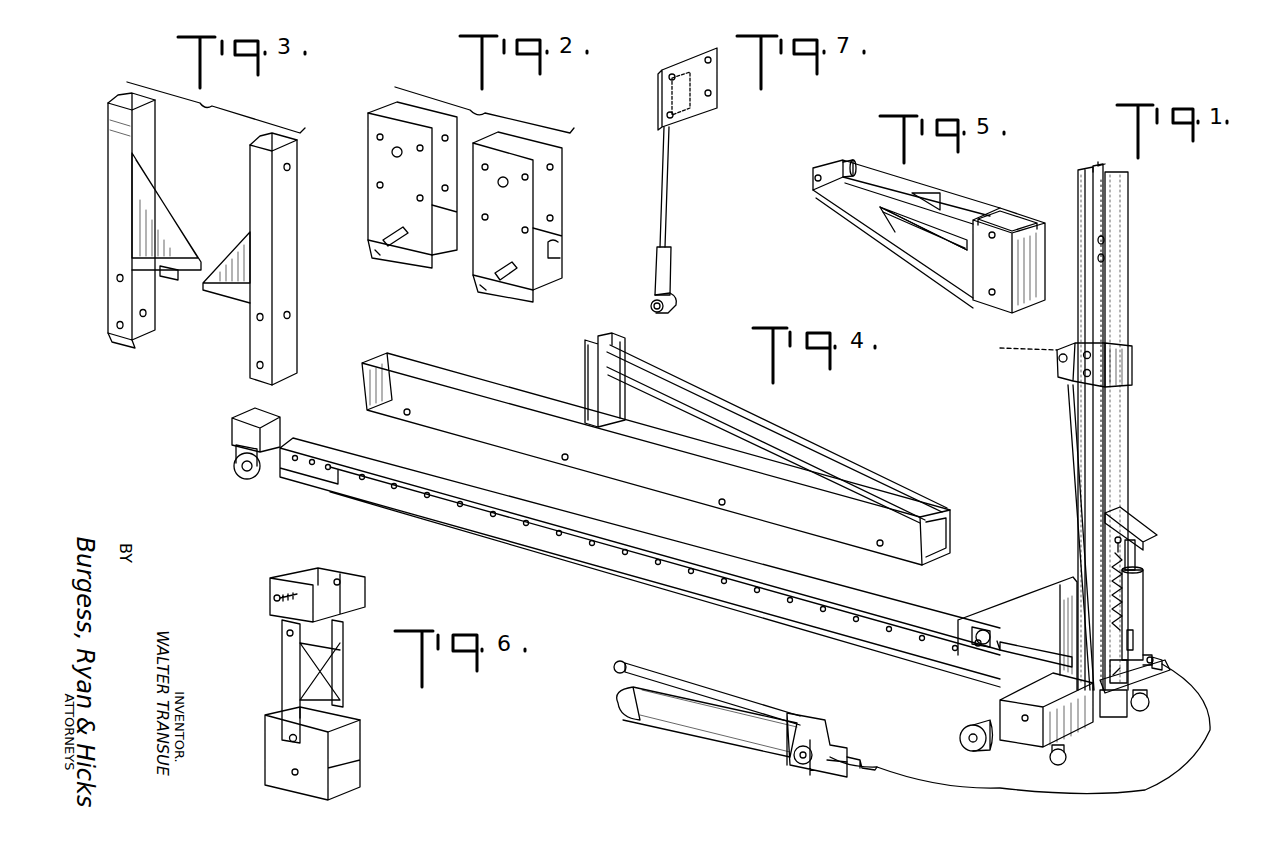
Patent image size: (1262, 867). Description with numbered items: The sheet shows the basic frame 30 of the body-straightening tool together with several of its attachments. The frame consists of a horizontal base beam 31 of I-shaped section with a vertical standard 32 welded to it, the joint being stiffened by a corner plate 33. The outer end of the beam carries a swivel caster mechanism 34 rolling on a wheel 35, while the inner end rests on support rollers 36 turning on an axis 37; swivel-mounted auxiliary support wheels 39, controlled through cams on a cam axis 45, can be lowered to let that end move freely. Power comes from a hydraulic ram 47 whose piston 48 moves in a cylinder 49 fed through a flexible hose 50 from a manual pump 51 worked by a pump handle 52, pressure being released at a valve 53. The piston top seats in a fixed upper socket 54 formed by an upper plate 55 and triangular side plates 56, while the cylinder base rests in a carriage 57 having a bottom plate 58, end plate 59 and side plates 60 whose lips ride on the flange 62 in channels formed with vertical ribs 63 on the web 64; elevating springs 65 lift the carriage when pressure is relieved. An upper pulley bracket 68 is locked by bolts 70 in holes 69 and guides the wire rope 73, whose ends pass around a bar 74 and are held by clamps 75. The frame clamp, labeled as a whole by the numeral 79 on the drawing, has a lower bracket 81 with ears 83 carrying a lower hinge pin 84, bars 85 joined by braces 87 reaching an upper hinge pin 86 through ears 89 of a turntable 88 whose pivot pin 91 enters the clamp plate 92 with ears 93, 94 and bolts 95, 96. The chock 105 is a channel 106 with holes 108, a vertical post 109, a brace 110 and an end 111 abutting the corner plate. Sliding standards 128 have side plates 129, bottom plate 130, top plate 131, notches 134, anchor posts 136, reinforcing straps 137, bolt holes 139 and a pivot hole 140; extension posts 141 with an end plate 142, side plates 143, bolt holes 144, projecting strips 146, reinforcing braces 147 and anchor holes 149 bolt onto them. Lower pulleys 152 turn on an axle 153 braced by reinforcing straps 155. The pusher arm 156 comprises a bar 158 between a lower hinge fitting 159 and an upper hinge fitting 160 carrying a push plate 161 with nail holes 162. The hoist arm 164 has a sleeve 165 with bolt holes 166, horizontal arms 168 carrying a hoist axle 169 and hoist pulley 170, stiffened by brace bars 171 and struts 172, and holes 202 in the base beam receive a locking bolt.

In FIG. 1, the basic frame 30 is at (645, 594).
In FIG. 1, the base beam 31 is at (560, 563).
In FIG. 1, the standard 32 is at (1130, 204).
In FIG. 1, the corner plate 33 is at (1010, 600).
In FIG. 1, the swivel caster mechanism 34 is at (232, 428).
In FIG. 1, the wheel 35 is at (235, 476).
In FIG. 1, the support roller 36 is at (1025, 722).
In FIG. 1, the axis 37 is at (960, 738).
In FIG. 1, the auxiliary support wheels 39 is at (1066, 752).
In FIG. 1, the cam axis 45 is at (1040, 750).
In FIG. 1, the hydraulic ram 47 is at (1147, 580).
In FIG. 1, the piston 48 is at (1138, 560).
In FIG. 1, the cylinder 49 is at (1136, 635).
In FIG. 1, the flexible hose 50 is at (1140, 789).
In FIG. 1, the manual pump 51 is at (692, 737).
In FIG. 1, the pump handle 52 is at (707, 688).
In FIG. 1, the valve 53 is at (803, 765).
In FIG. 1, the upper socket 54 is at (1153, 514).
In FIG. 1, the upper plate 55 is at (1130, 510).
In FIG. 1, the side plates 56 is at (1160, 532).
In FIG. 1, the carriage 57 is at (1165, 652).
In FIG. 1, the bottom plate 58 is at (1168, 665).
In FIG. 1, the end plate 59 is at (1168, 665).
In FIG. 1, the side plates 60 is at (1125, 660).
In FIG. 1, the flange 62 is at (1115, 458).
In FIG. 1, the vertical ribs 63 is at (1080, 607).
In FIG. 1, the web 64 is at (1110, 433).
In FIG. 1, the elevating springs 65 is at (1128, 600).
In FIG. 1, the upper pulley bracket 68 is at (1141, 351).
In FIG. 1, the holes 69 is at (1104, 258).
In FIG. 1, the bolts 70 is at (1083, 374).
In FIG. 1, the wire rope 73 is at (1072, 412).
In FIG. 1, the bar 74 is at (1112, 718).
In FIG. 1, the clamps 75 is at (1160, 680).
In FIG. 6, the slide post 79 is at (277, 676).
In FIG. 6, the lower bracket 81 is at (361, 765).
In FIG. 6, the ears 83 is at (361, 728).
In FIG. 6, the lower hinge pin 84 is at (289, 739).
In FIG. 6, the bars 85 is at (282, 695).
In FIG. 6, the upper hinge pin 86 is at (286, 633).
In FIG. 6, the braces 87 is at (335, 668).
In FIG. 6, the turntable 88 is at (370, 615).
In FIG. 6, the ears 89 is at (283, 650).
In FIG. 6, the pivot pin 91 is at (318, 582).
In FIG. 6, the clamp plate 92 is at (350, 600).
In FIG. 6, the ear 93 is at (272, 578).
In FIG. 6, the ear 94 is at (366, 580).
In FIG. 6, the bolt 95 is at (273, 598).
In FIG. 6, the bolt 96 is at (338, 578).
In FIG. 4, the chock 105 is at (510, 383).
In FIG. 4, the channel 106 is at (412, 366).
In FIG. 4, the holes 108 is at (411, 412).
In FIG. 4, the vertical post 109 is at (585, 372).
In FIG. 4, the brace 110 is at (704, 382).
In FIG. 4, the end 111 is at (955, 527).
In FIG. 2, the sliding standards 128 is at (575, 156).
In FIG. 2, the side plates 129 is at (565, 210).
In FIG. 2, the bottom plate 130 is at (540, 290).
In FIG. 2, the top plate 131 is at (552, 233).
In FIG. 2, the notches 134 is at (560, 257).
In FIG. 2, the anchor posts 136 is at (500, 258).
In FIG. 2, the reinforcing straps 137 is at (508, 278).
In FIG. 2, the bolt holes 139 is at (377, 138).
In FIG. 2, the pivot hole 140 is at (395, 148).
In FIG. 3, the extension posts 141 is at (97, 174).
In FIG. 3, the end plate 142 is at (115, 96).
In FIG. 3, the side plates 143 is at (156, 146).
In FIG. 3, the bolt holes 144 is at (117, 322).
In FIG. 3, the projecting strips 146 is at (200, 297).
In FIG. 3, the reinforcing braces 147 is at (160, 212).
In FIG. 3, the anchor holes 149 is at (290, 168).
In FIG. 1, the lower pulleys 152 is at (982, 630).
In FIG. 1, the axle 153 is at (976, 647).
In FIG. 1, the reinforcing straps 155 is at (1022, 643).
In FIG. 7, the pusher arm 156 is at (678, 195).
In FIG. 7, the bar 158 is at (668, 230).
In FIG. 7, the lower hinge fitting 159 is at (672, 268).
In FIG. 7, the upper hinge fitting 160 is at (691, 118).
In FIG. 7, the push plate 161 is at (692, 55).
In FIG. 7, the nail holes 162 is at (667, 113).
In FIG. 5, the hoist arm 164 is at (975, 200).
In FIG. 5, the sleeve 165 is at (985, 280).
In FIG. 5, the bolt holes 166 is at (1013, 223).
In FIG. 5, the horizontal arms 168 is at (862, 183).
In FIG. 5, the hoist axle 169 is at (818, 182).
In FIG. 5, the hoist pulley 170 is at (840, 161).
In FIG. 5, the brace bars 171 is at (905, 252).
In FIG. 5, the struts 172 is at (921, 196).
In FIG. 1, the holes 202 is at (459, 510).